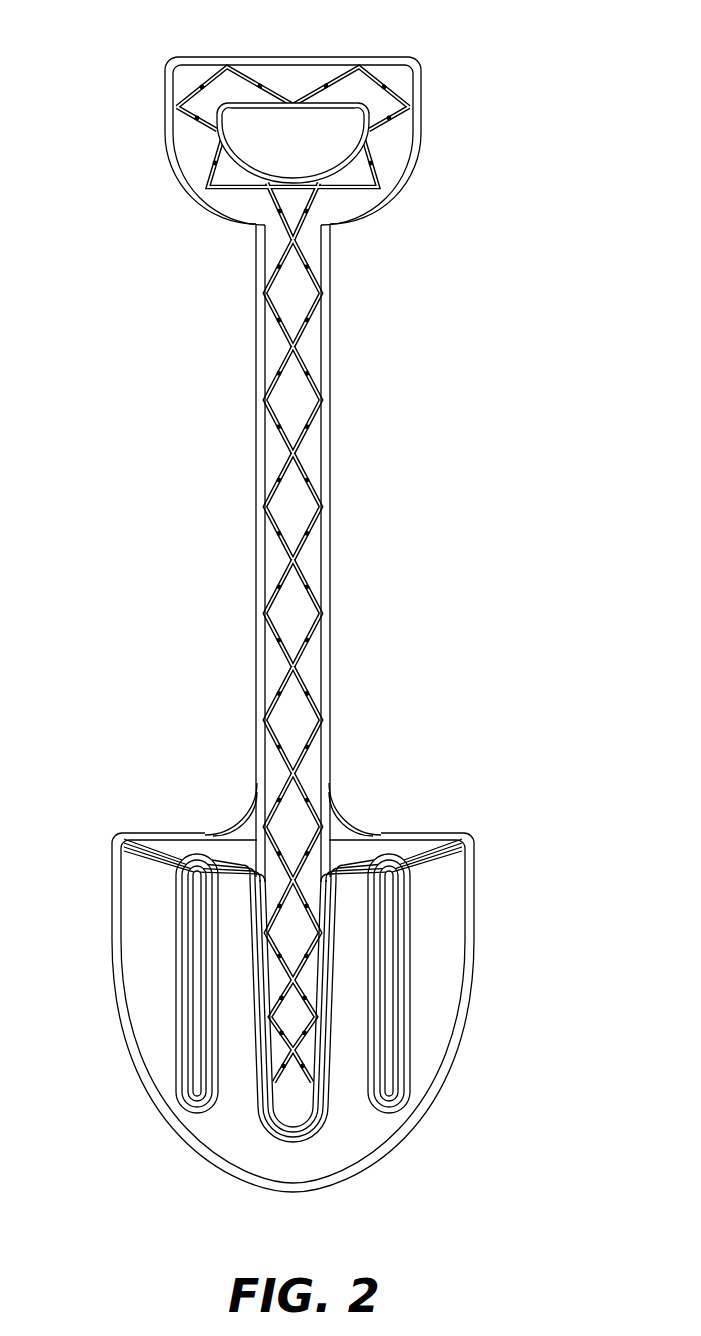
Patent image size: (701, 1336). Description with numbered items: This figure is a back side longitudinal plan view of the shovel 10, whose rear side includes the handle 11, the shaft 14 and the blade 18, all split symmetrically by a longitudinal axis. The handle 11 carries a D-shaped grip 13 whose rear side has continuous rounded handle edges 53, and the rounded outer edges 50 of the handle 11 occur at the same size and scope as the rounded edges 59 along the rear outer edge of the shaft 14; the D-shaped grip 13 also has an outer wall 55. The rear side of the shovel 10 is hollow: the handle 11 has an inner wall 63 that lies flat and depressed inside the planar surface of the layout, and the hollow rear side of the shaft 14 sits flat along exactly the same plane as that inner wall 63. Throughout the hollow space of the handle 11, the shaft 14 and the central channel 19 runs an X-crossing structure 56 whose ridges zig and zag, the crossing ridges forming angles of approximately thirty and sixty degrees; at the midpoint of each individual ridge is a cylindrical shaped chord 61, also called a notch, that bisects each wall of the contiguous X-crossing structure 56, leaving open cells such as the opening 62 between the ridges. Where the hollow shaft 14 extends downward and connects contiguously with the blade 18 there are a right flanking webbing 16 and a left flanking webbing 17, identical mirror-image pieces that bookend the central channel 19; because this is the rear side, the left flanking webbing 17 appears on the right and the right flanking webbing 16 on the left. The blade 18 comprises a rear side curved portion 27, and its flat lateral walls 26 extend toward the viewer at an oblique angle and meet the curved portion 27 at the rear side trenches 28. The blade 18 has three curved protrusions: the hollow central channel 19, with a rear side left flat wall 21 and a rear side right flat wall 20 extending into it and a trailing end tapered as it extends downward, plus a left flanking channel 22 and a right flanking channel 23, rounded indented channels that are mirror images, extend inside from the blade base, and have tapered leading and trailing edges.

The shovel 10 is at (429, 618).
The handle 11 is at (422, 92).
The D-shaped grip 13 is at (307, 90).
The shaft 14 is at (331, 448).
The right flanking webbing 16 is at (347, 820).
The left flanking webbing 17 is at (243, 823).
The blade 18 is at (112, 917).
The central channel 19 is at (293, 1103).
The rear side right flat wall 20 is at (263, 1065).
The rear side left flat wall 21 is at (322, 983).
The left flanking channel 22 is at (195, 1077).
The right flanking channel 23 is at (390, 1107).
The lateral walls 26 is at (363, 850).
The rear side curved portion 27 is at (425, 1060).
The rear side trenches 28 is at (433, 857).
The outer edges 50 is at (398, 60).
The rounded handle edges 53 is at (345, 103).
The outer wall 55 is at (468, 975).
The X-crossing structure 56 is at (210, 143).
The rounded edges 59 is at (257, 338).
The cylindrical shaped chord 61 is at (197, 72).
The lattice opening 62 is at (292, 507).
The inner wall 63 is at (397, 148).